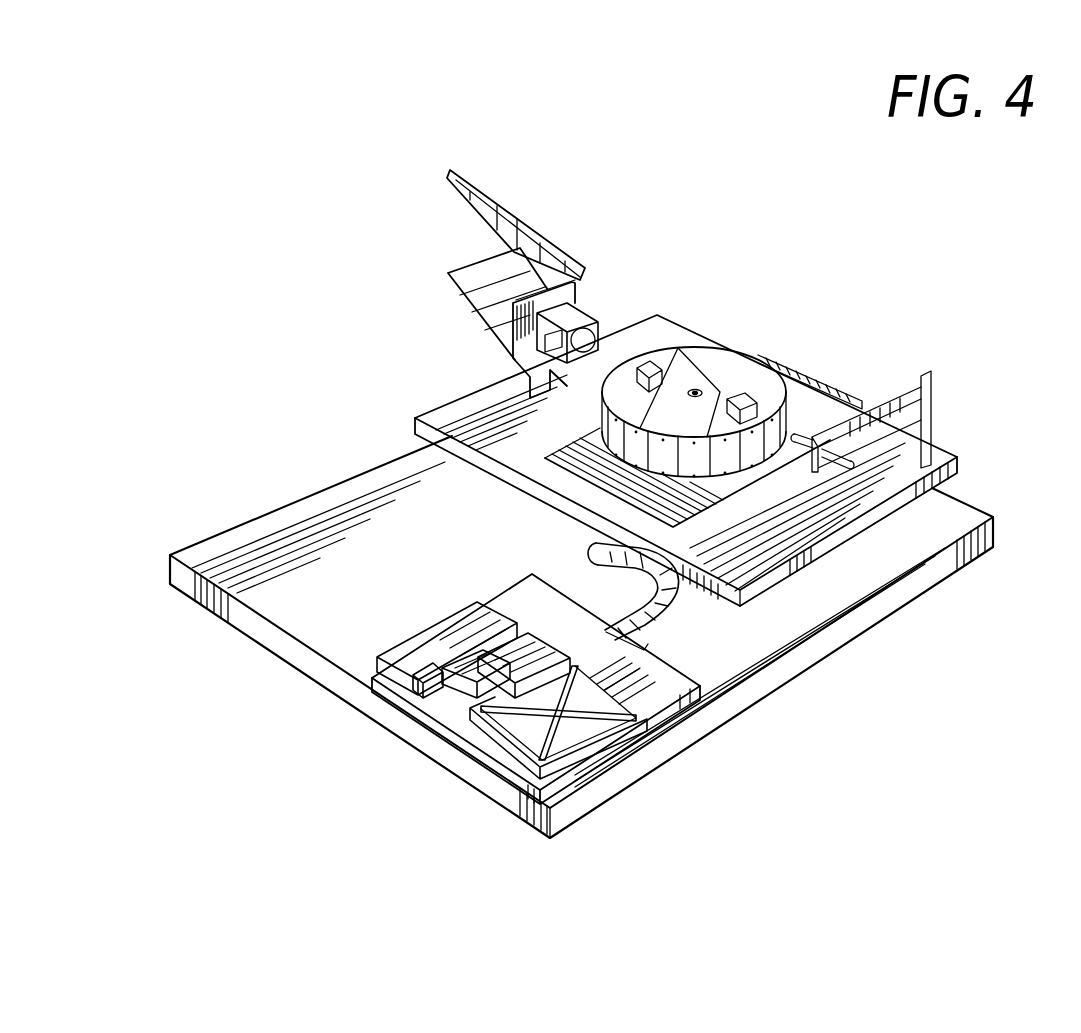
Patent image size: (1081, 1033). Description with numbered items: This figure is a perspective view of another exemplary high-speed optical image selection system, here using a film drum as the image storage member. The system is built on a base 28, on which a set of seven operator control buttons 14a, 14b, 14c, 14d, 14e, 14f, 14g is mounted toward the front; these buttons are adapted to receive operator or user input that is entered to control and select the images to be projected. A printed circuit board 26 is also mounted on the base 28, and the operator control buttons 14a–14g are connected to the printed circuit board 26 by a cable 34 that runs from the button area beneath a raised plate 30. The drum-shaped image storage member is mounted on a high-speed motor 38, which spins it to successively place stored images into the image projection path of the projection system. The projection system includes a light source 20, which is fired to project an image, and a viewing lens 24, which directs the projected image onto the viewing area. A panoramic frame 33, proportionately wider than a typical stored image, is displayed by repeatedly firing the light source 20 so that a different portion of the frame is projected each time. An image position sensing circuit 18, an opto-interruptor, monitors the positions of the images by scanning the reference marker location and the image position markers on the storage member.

The operator control button 14a is at (403, 655).
The operator control button 14b is at (440, 686).
The operator control button 14c is at (505, 685).
The operator control button 14d is at (515, 690).
The operator control button 14e is at (550, 700).
The operator control button 14f is at (600, 668).
The operator control button 14g is at (593, 685).
The image position sensing circuit 18 is at (800, 436).
The light source 20 is at (663, 355).
The viewing lens 24 is at (495, 196).
The printed circuit board 26 is at (793, 376).
The base 28 is at (237, 537).
The upper plate 30 is at (460, 410).
The panoramic frame 33 is at (640, 372).
The cable 34 is at (672, 603).
The high-speed motor 38 is at (700, 391).